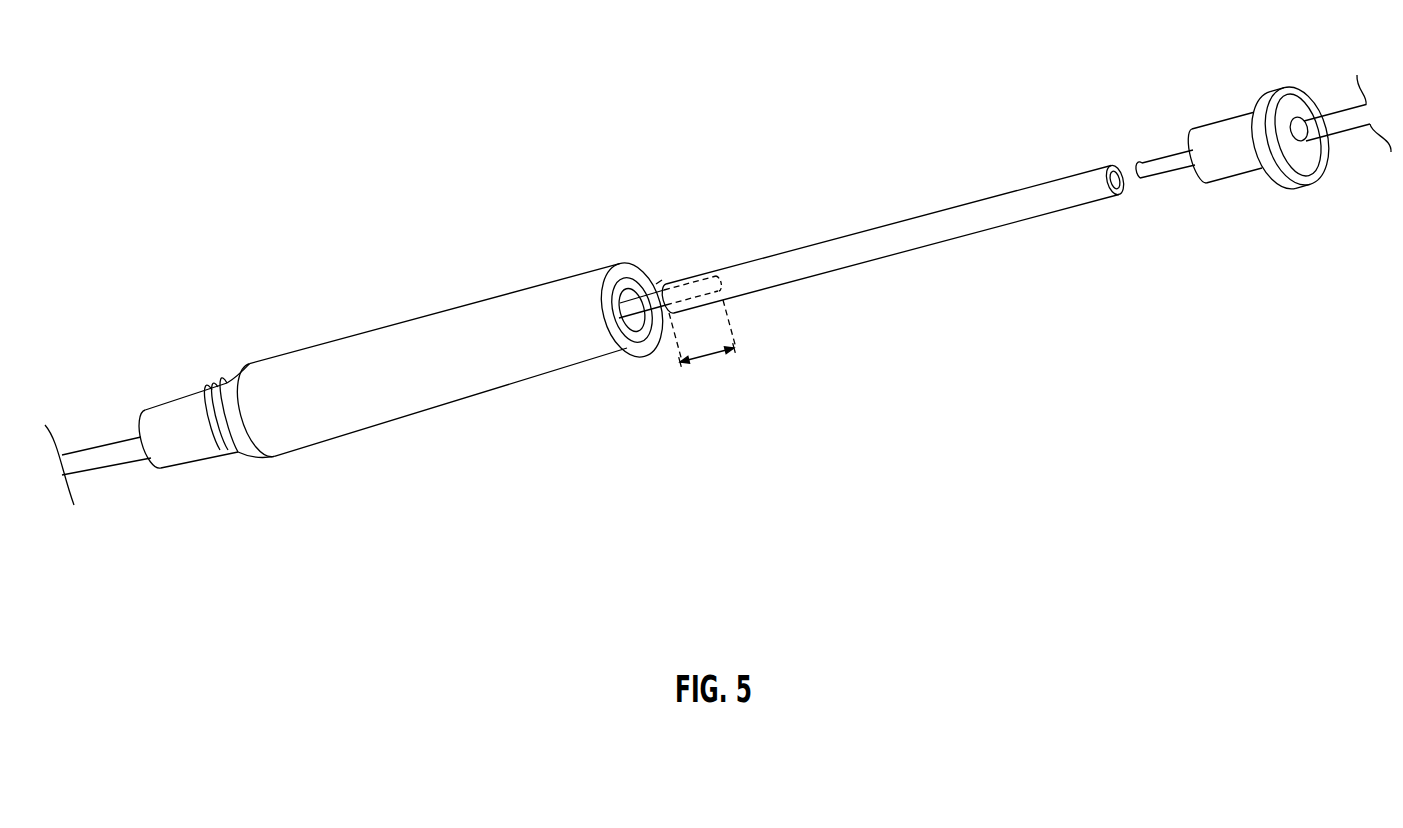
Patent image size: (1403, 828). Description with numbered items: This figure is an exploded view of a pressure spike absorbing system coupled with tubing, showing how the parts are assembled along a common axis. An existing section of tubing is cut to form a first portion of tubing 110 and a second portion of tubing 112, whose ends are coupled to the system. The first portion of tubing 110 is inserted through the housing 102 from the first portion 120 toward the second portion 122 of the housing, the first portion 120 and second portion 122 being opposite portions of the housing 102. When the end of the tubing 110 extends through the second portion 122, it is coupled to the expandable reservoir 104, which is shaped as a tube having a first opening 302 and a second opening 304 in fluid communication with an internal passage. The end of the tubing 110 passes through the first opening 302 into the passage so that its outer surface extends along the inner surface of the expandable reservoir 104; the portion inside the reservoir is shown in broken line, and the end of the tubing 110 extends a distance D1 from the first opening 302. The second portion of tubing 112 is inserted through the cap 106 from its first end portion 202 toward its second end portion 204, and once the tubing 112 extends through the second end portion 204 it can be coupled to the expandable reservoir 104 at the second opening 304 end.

The housing 102 is at (286, 360).
The expandable reservoir 104 is at (852, 247).
The cap 106 is at (1223, 136).
The first portion of tubing 110 is at (102, 443).
The second portion of tubing 112 is at (1344, 128).
The first portion 120 is at (151, 463).
The second portion 122 is at (622, 268).
The first end portion 202 is at (1292, 102).
The second end portion 204 is at (1199, 182).
The first opening 302 is at (655, 279).
The second opening 304 is at (1121, 165).
The distance D1 is at (703, 356).